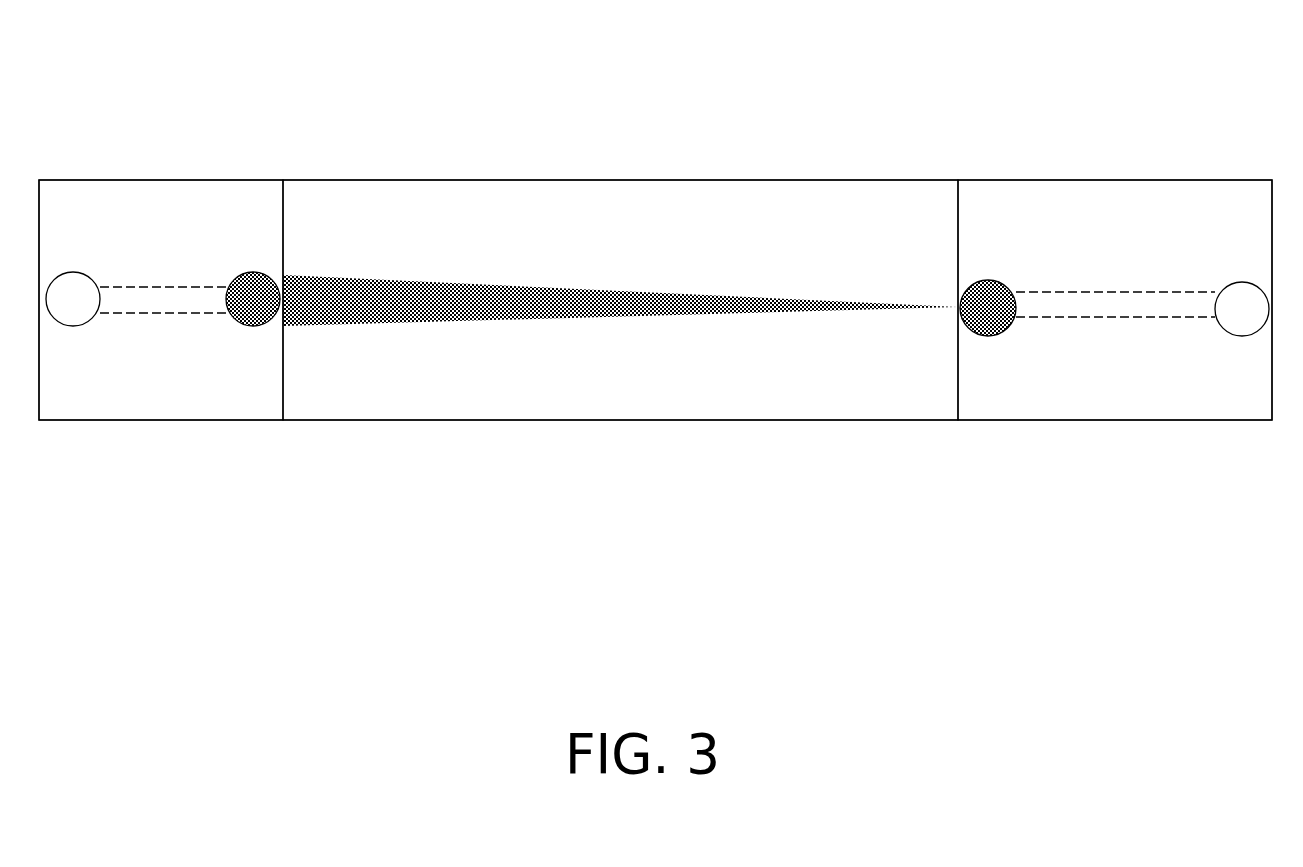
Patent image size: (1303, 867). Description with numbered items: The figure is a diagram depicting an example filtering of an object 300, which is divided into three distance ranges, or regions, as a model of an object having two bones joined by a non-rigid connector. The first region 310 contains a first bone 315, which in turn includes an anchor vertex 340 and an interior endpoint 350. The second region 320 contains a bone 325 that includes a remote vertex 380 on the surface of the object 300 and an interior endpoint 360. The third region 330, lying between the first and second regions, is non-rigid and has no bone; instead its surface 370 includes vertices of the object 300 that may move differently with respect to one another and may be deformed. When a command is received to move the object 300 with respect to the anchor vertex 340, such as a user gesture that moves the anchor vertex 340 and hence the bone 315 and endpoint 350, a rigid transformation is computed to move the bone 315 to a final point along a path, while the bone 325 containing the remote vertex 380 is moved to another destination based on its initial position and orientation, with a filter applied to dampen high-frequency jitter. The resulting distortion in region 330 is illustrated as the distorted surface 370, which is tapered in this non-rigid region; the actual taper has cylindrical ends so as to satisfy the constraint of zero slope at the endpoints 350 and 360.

The object 300 is at (1224, 53).
The first region 310 is at (141, 226).
The first bone 315 is at (160, 279).
The second region 320 is at (1088, 226).
The bone 325 is at (1088, 283).
The third region 330 is at (592, 224).
The anchor vertex 340 is at (90, 323).
The interior endpoint 350 is at (257, 326).
The interior endpoint 360 is at (1003, 330).
The surface 370 is at (527, 320).
The remote vertex 380 is at (1223, 328).